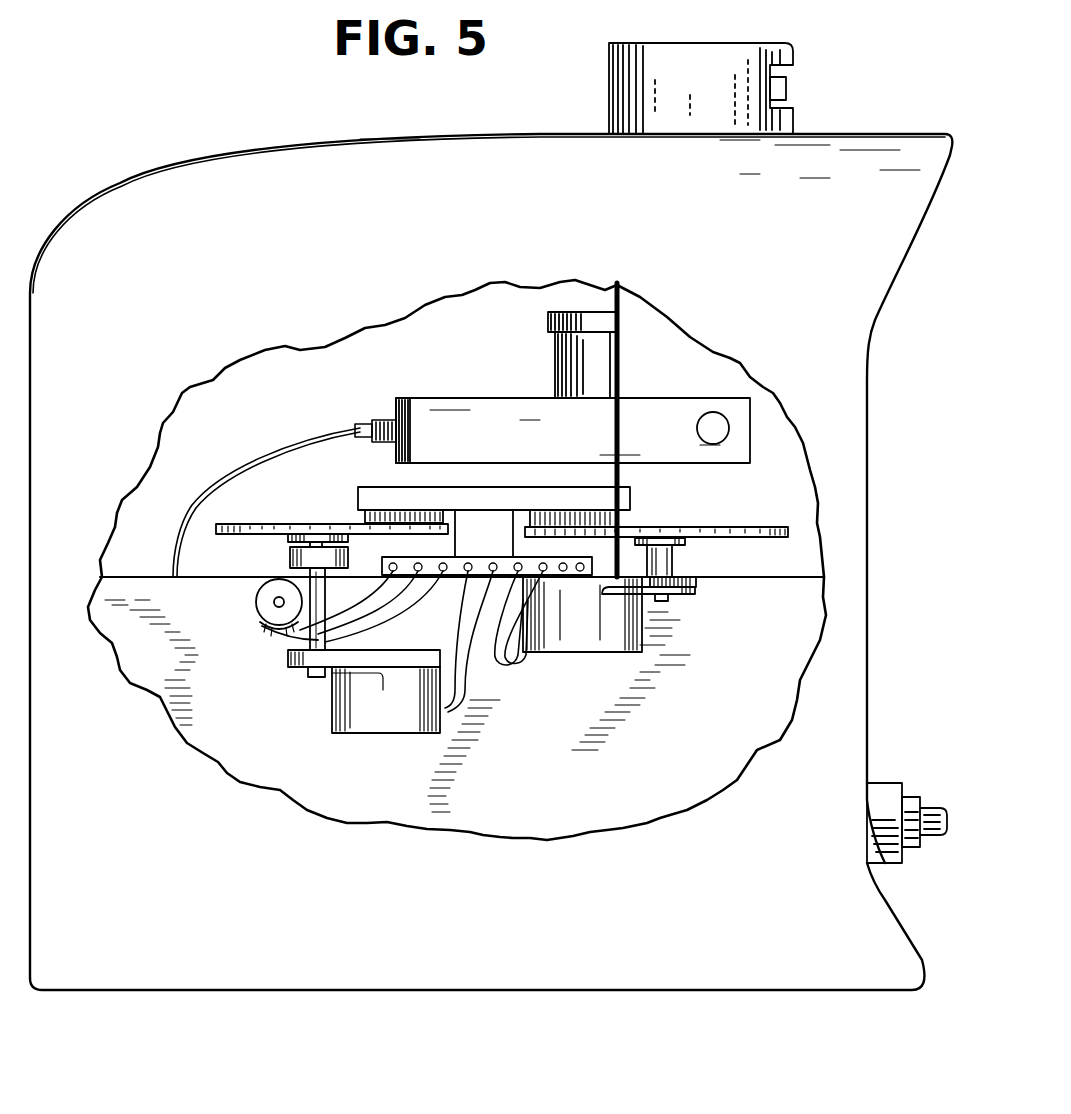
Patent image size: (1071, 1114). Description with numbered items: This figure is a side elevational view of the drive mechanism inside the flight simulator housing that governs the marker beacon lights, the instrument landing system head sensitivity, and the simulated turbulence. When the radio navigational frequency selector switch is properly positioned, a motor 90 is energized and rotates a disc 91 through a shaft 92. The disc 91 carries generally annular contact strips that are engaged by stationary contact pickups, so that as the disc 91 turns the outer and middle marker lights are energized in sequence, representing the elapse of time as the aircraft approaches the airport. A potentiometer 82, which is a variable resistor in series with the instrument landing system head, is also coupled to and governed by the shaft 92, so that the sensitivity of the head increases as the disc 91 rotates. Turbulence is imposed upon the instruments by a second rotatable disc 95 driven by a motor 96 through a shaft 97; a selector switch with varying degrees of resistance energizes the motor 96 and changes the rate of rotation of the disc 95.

The variable resistor 82 is at (288, 558).
The motor 90 is at (400, 722).
The disc 91 is at (238, 522).
The shaft 92 is at (318, 641).
The second rotatable disc 95 is at (783, 520).
The motor 96 is at (590, 645).
The shaft 97 is at (668, 558).